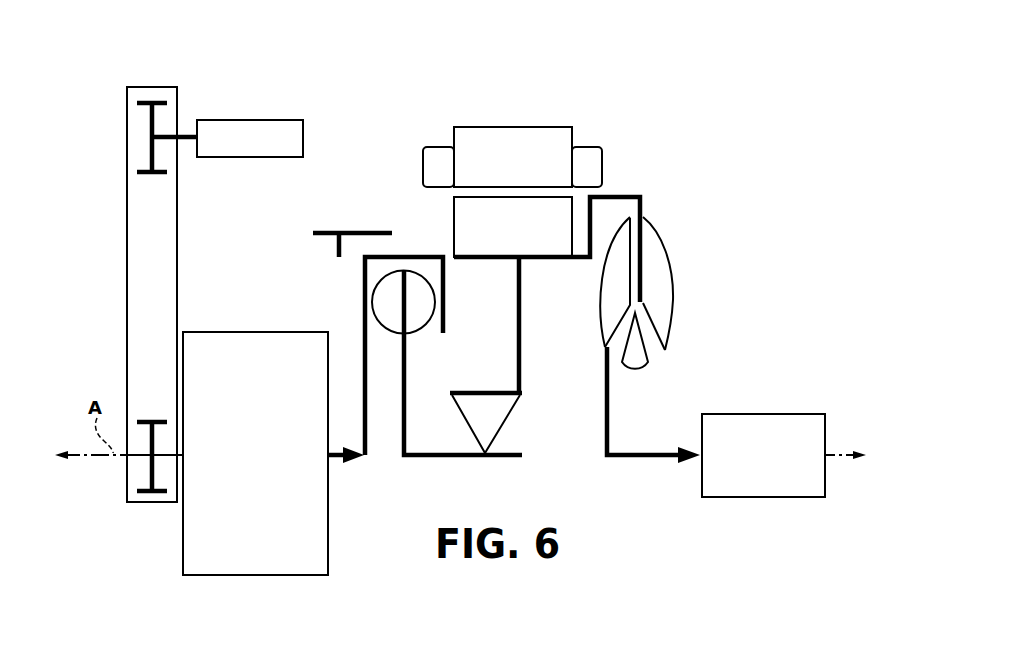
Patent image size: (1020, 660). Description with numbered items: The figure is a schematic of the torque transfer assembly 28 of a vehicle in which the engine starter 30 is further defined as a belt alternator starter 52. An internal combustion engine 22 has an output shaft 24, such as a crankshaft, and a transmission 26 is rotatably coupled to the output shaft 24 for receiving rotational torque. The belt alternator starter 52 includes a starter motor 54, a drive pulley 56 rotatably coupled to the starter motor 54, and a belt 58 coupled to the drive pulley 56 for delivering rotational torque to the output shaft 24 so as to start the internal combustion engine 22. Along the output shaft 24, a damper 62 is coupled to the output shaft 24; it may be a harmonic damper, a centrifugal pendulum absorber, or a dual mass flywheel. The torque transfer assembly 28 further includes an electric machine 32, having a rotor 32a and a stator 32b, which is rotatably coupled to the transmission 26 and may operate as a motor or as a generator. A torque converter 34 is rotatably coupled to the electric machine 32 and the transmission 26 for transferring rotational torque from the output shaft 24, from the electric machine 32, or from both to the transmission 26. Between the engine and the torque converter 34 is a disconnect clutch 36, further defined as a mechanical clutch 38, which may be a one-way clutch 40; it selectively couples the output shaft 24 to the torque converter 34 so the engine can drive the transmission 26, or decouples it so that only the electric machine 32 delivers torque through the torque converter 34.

The internal combustion engine 22 is at (255, 453).
The output shaft 24 is at (340, 461).
The transmission 26 is at (763, 455).
The torque transfer assembly 28 is at (588, 270).
The engine starter 30 is at (227, 103).
The electric machine 32 is at (563, 182).
The rotor 32a is at (557, 220).
The stator 32b is at (547, 170).
The torque converter 34 is at (673, 303).
The disconnect clutch 36 is at (561, 377).
The mechanical clutch 38 is at (561, 377).
The one-way clutch 40 is at (497, 415).
The belt alternator starter 52 is at (100, 292).
The starter motor 54 is at (250, 138).
The drive pulley 56 is at (148, 122).
The belt 58 is at (127, 245).
The damper 62 is at (388, 305).